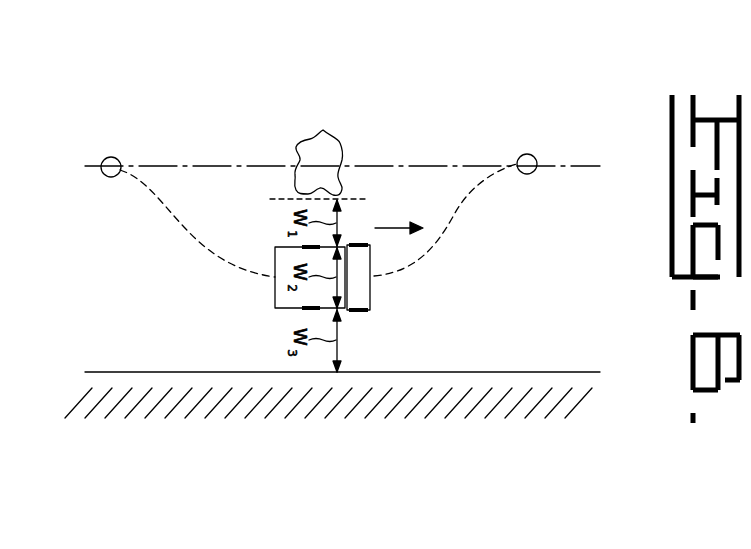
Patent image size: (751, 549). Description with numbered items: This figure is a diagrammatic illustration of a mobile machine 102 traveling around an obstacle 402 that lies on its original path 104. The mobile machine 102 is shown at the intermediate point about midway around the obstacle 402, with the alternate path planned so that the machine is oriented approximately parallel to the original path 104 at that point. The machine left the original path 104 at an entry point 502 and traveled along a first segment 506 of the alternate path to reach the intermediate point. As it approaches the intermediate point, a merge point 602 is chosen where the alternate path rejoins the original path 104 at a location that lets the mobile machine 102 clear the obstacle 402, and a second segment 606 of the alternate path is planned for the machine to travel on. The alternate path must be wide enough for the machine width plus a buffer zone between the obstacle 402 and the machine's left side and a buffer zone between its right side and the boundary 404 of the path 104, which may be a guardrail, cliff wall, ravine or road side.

The mobile machine 102 is at (275, 300).
The path 104 is at (582, 166).
The obstacle 402 is at (323, 130).
The boundary 404 is at (118, 372).
The entry point 502 is at (112, 177).
The first segment of alternate path 506 is at (190, 228).
The merge point 602 is at (527, 174).
The second segment of alternate path 606 is at (435, 252).